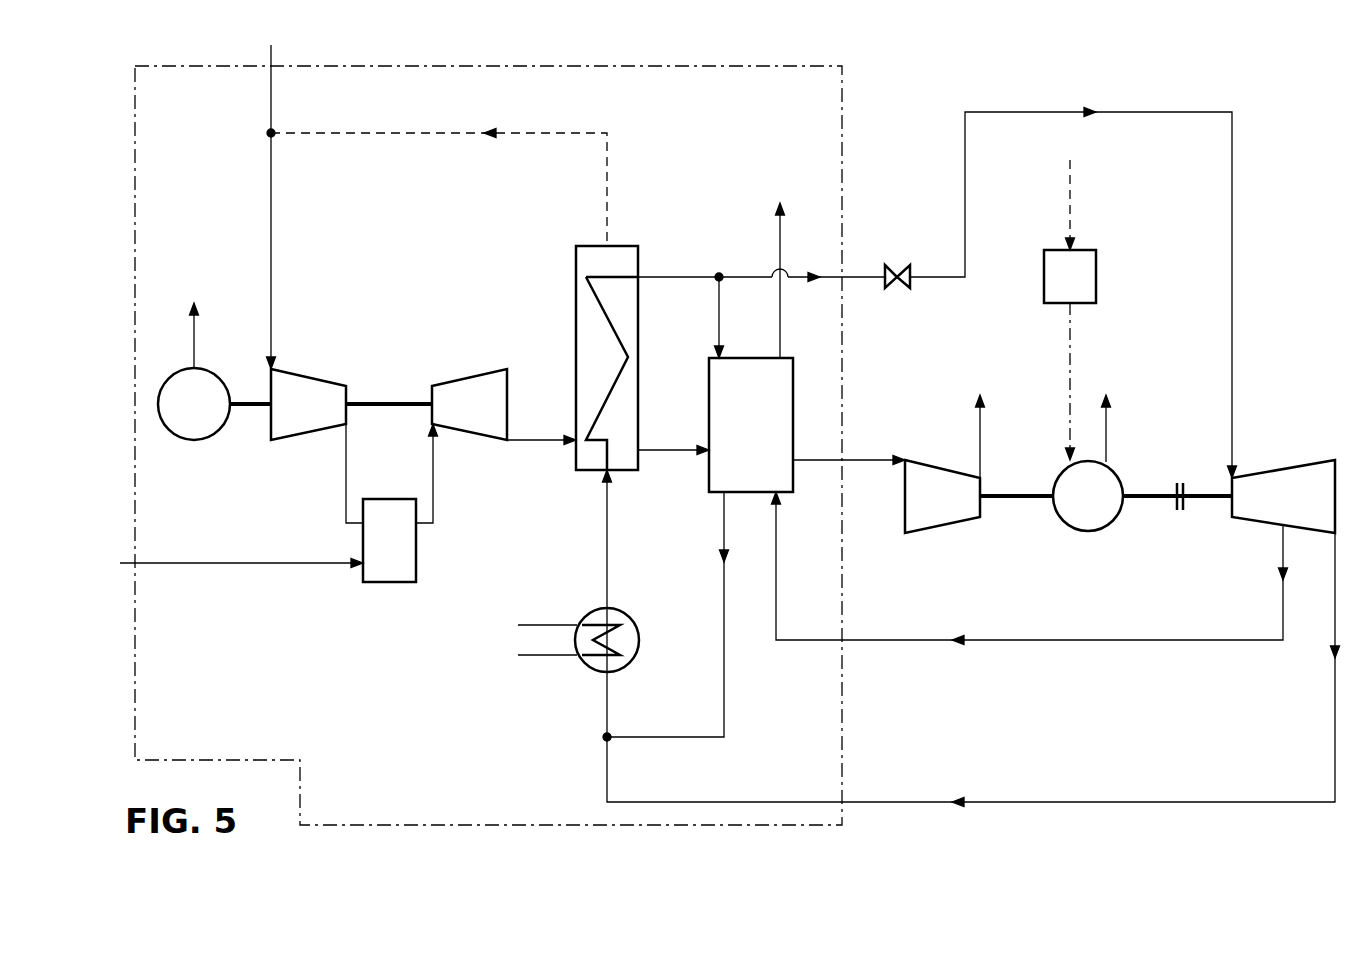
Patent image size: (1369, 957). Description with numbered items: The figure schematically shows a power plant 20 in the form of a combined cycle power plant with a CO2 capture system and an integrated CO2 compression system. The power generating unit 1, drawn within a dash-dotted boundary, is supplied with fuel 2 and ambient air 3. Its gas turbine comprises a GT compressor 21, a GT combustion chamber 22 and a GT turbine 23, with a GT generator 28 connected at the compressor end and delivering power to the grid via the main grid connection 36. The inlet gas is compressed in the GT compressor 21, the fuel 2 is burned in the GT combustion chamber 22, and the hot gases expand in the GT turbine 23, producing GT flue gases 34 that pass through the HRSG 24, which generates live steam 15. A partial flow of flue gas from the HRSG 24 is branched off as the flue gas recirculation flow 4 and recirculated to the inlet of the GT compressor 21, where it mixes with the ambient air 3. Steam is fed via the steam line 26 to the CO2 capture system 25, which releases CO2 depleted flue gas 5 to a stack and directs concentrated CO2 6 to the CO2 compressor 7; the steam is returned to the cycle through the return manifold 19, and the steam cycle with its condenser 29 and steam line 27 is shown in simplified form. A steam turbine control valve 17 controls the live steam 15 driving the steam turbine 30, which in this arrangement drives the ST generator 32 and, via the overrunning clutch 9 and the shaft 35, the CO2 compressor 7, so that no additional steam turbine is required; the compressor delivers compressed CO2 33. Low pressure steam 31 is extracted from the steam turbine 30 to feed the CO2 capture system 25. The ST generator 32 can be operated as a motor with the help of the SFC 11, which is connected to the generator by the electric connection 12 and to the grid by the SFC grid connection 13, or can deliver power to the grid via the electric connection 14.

The power generating unit 1 is at (330, 716).
The fuel supply 2 is at (230, 560).
The ambient air 3 is at (268, 228).
The flue gas recirculation flow 4 is at (407, 131).
The CO2 depleted flue gas 5 is at (779, 266).
The concentrated CO2 6 is at (863, 459).
The CO2 compressor 7 is at (934, 509).
The overrunning clutch 9 is at (1180, 480).
The SFC 11 is at (1056, 290).
The electric connection from SFC to drive generator 12 is at (1067, 413).
The SFC grid connection 13 is at (1067, 200).
The electric connection from generator to grid 14 is at (1106, 414).
The live steam 15 is at (1234, 293).
The steam turbine control valve 17 is at (898, 270).
The low grade steam/condensate return manifold 19 is at (1155, 800).
The power plant 20 is at (1280, 137).
The GT compressor 21 is at (294, 417).
The GT combustion chamber 22 is at (375, 551).
The GT turbine 23 is at (456, 417).
The HRSG 24 is at (588, 328).
The CO2 capture system 25 is at (737, 438).
The steam line to CO2 capture system 26 is at (716, 302).
The steam line to steam turbine 30 27 is at (721, 620).
The GT generator 28 is at (180, 417).
The condenser 29 is at (600, 662).
The steam turbine 30 is at (1271, 509).
The low pressure steam 31 is at (1043, 643).
The ST generator 32 is at (1074, 509).
The compressed CO2 33 is at (977, 425).
The GT flue gases 34 is at (538, 442).
The shaft 35 is at (1158, 502).
The main grid connection 36 is at (193, 322).